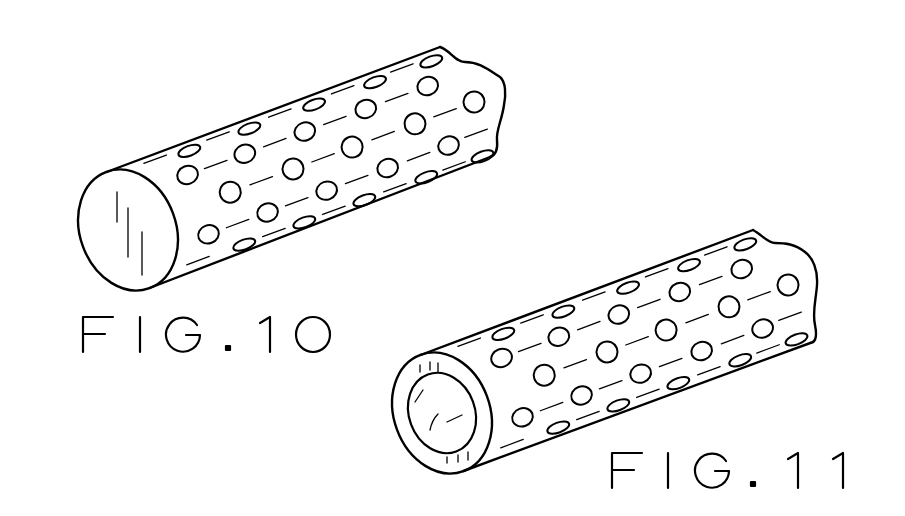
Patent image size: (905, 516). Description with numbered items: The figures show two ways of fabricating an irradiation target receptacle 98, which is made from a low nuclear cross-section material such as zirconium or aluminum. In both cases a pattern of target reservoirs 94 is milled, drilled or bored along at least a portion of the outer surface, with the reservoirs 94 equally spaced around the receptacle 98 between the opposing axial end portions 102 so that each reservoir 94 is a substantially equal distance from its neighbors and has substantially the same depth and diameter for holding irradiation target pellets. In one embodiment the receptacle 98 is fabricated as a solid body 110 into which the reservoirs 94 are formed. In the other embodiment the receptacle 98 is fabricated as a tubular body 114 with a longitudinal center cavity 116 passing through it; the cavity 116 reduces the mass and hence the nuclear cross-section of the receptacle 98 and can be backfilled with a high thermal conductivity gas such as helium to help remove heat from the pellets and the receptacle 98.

In FIG. 10, the target reservoir 94 is at (244, 150).
In FIG. 11, the target reservoir 94 is at (619, 310).
In FIG. 10, the target receptacle 98 is at (278, 163).
In FIG. 11, the target receptacle 98 is at (580, 332).
In FIG. 10, the axial end portion 102 is at (193, 262).
In FIG. 11, the axial end portion 102 is at (479, 343).
In FIG. 10, the solid body 110 is at (120, 235).
In FIG. 11, the tubular body 114 is at (478, 447).
In FIG. 11, the longitudinal center cavity 116 is at (418, 428).